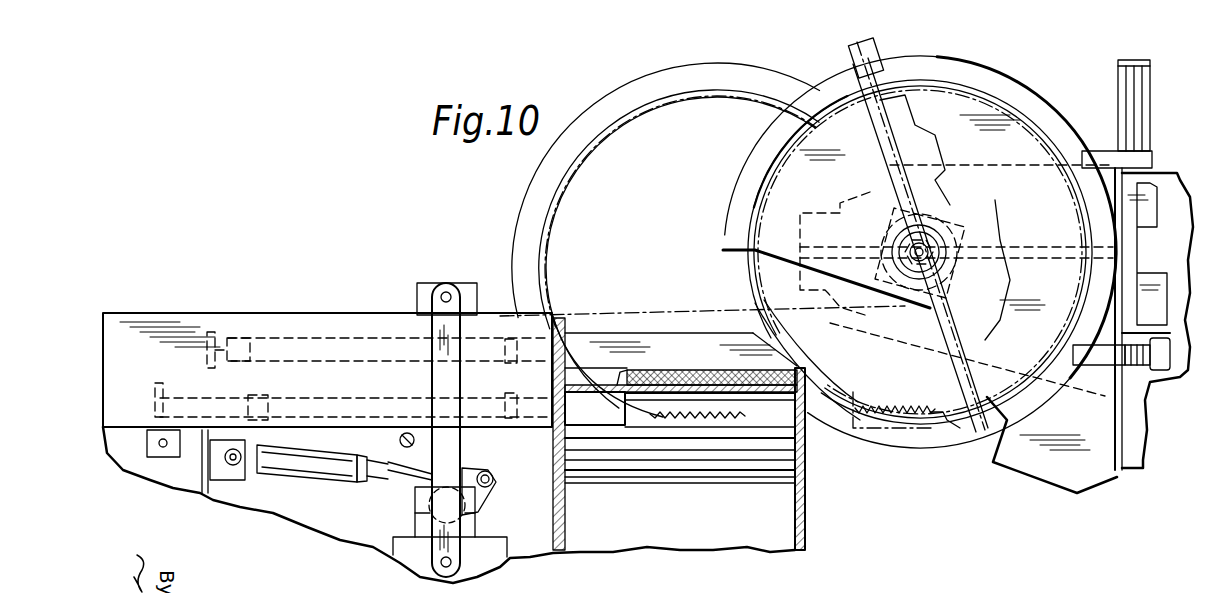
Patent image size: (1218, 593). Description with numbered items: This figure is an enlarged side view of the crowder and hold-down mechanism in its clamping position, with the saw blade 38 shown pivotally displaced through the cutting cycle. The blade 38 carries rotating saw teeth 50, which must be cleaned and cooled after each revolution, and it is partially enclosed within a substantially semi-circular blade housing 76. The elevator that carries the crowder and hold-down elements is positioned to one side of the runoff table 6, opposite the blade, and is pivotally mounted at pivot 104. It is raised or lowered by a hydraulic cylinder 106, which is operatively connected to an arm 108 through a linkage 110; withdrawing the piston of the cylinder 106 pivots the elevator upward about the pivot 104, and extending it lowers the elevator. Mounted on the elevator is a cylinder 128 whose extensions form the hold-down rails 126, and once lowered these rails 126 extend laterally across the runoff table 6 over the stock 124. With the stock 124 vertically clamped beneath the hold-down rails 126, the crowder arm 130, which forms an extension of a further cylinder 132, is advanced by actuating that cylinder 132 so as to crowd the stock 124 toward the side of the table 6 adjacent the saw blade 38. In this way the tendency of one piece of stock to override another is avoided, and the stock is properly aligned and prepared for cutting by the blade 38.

The runoff table 6 is at (805, 498).
The saw blade 38 is at (930, 414).
The saw teeth 50 is at (872, 405).
The blade housing 76 is at (1042, 110).
The pivot 104 is at (153, 455).
The hydraulic cylinder 106 is at (325, 470).
The arm 108 is at (455, 450).
The linkage 110 is at (430, 502).
The stock 124 is at (715, 370).
The hold-down rails 126 is at (650, 340).
The cylinder 128 is at (295, 340).
The crowder arm 130 is at (585, 413).
The cylinder 132 is at (296, 401).